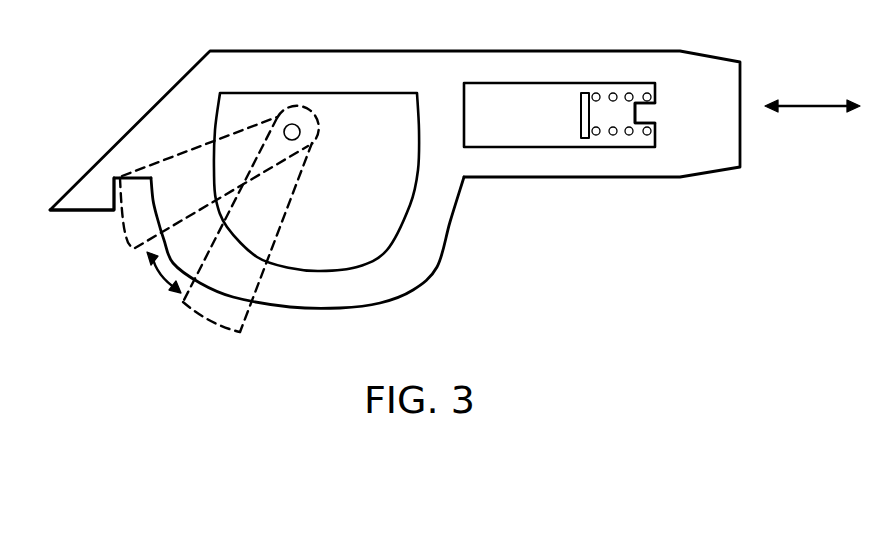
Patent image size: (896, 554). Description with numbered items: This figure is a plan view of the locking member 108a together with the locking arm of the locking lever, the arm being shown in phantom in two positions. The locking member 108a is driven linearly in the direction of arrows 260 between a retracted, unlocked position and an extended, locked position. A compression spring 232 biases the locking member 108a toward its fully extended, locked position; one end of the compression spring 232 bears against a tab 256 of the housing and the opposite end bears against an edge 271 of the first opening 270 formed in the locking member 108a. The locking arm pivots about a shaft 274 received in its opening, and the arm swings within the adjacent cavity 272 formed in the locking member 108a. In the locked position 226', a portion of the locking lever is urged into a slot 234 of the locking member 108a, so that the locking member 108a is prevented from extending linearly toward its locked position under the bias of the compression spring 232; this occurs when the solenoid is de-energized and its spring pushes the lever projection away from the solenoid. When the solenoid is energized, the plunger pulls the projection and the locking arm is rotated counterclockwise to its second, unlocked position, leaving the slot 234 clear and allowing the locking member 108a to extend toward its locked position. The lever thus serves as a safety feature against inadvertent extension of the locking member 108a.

The locking member 108a is at (703, 178).
The trigger cavity 272 is at (345, 112).
The slot 234 is at (113, 195).
The shaft 274 is at (292, 124).
The locked position of locking arm 226' is at (219, 151).
The first opening 270 is at (518, 94).
The compression spring 232 is at (595, 92).
The edge 271 is at (650, 90).
The tab 256 is at (580, 130).
The arrows 260 is at (803, 102).